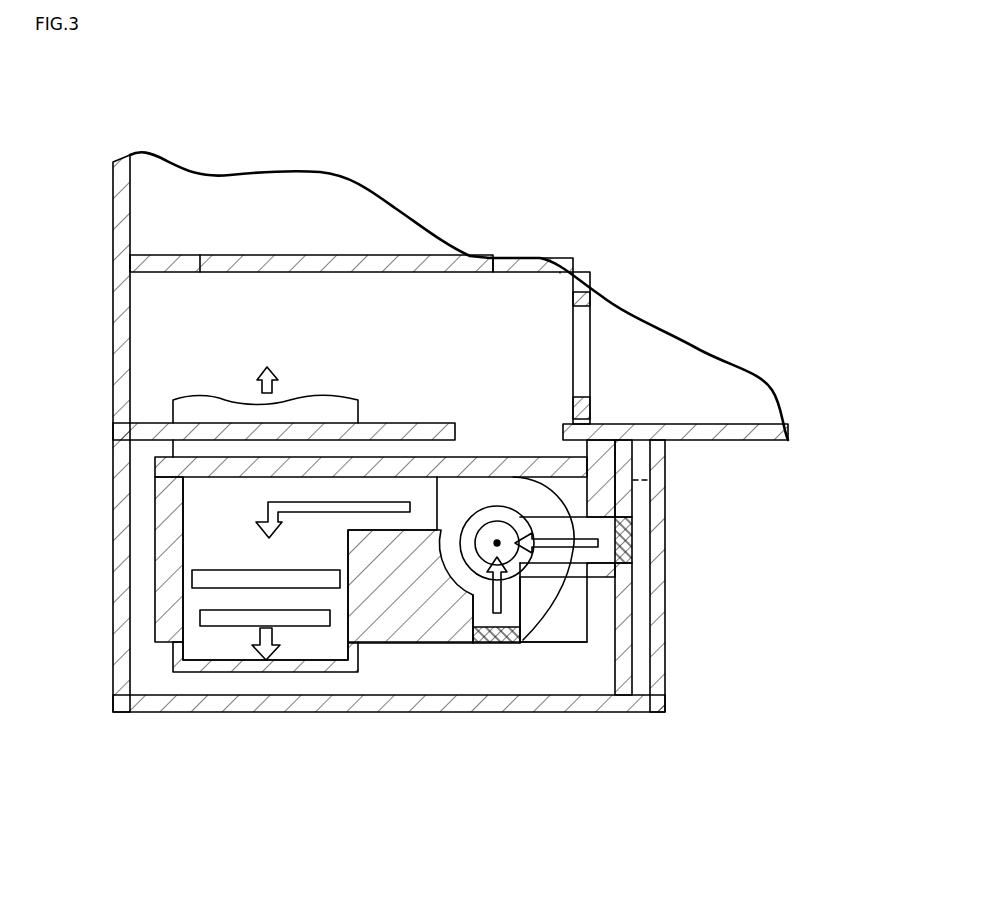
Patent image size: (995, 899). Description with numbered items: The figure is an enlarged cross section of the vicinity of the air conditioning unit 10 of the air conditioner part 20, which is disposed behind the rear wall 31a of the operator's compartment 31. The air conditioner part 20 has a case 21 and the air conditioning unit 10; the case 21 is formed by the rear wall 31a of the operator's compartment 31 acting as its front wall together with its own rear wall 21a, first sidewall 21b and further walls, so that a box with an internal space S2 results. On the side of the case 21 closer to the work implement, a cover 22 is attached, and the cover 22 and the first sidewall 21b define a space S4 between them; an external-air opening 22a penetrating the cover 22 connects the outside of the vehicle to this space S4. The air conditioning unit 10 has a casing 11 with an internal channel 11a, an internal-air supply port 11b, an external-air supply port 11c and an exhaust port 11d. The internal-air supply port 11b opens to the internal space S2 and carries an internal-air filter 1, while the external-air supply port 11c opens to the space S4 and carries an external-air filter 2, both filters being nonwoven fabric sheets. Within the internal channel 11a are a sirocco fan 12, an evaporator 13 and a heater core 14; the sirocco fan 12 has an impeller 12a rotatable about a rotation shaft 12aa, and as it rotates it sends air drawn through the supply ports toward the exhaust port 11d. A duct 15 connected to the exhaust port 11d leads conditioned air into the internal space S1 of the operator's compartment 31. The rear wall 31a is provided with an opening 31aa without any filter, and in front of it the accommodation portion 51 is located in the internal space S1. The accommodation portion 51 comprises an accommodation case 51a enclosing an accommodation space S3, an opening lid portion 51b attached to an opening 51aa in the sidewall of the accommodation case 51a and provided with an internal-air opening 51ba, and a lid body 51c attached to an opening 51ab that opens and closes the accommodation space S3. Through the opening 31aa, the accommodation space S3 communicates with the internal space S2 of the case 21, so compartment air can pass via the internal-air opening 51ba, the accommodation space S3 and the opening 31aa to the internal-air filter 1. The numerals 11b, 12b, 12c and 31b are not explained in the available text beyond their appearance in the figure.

The internal-air filter 1 is at (497, 640).
The external-air filter 2 is at (625, 537).
The air conditioning unit 10 is at (563, 626).
The casing 11 is at (385, 609).
The internal channel 11a is at (244, 568).
The internal-air supply port 11b is at (520, 622).
The external-air supply port 11c is at (600, 577).
The exhaust port 11d is at (330, 640).
The sirocco fan 12 is at (563, 626).
The impeller 12a is at (600, 470).
The rotation shaft 12aa is at (466, 552).
The fan outlet 12b is at (570, 500).
The fan inlet 12c is at (428, 505).
The evaporator 13 is at (205, 580).
The heater core 14 is at (210, 618).
The duct 15 is at (173, 412).
The air conditioner part 20 is at (115, 728).
The case 21 is at (298, 705).
The rear wall 21a is at (250, 705).
The first sidewall 21b is at (620, 665).
The cover 22 is at (657, 645).
The external-air opening 22a is at (656, 567).
The operator's compartment 31 is at (382, 228).
The rear wall 31a is at (697, 430).
The opening 31aa is at (550, 307).
The cover side wall 31b is at (128, 243).
The accommodation portion 51 is at (311, 193).
The accommodation case 51a is at (170, 268).
The opening 51aa is at (592, 412).
The opening 51ab is at (483, 256).
The opening lid portion 51b is at (632, 317).
The internal-air opening 51ba is at (592, 310).
The lid body 51c is at (422, 268).
The internal space S1 is at (333, 215).
The internal space S2 is at (557, 670).
The accommodation space S3 is at (508, 310).
The space S4 is at (640, 685).